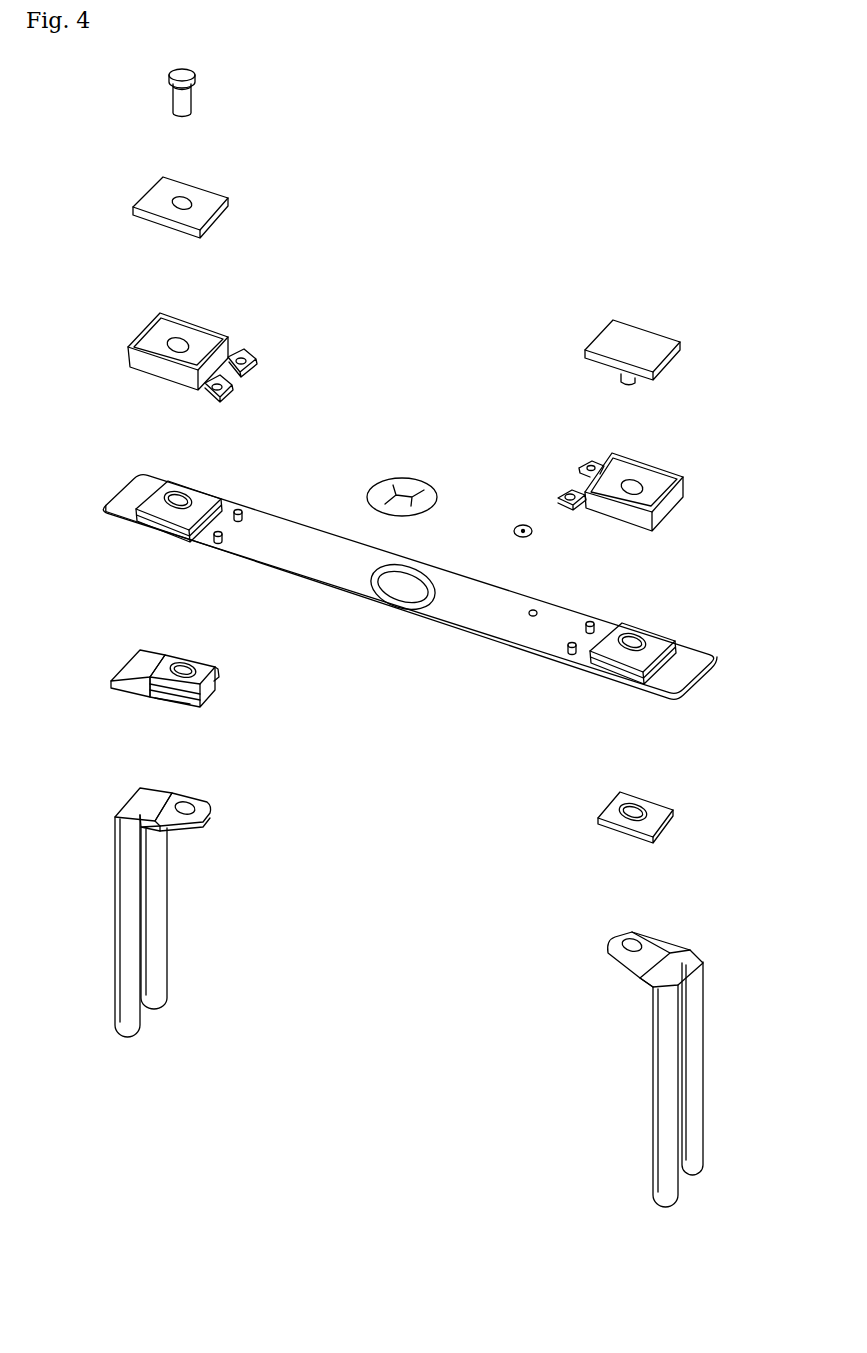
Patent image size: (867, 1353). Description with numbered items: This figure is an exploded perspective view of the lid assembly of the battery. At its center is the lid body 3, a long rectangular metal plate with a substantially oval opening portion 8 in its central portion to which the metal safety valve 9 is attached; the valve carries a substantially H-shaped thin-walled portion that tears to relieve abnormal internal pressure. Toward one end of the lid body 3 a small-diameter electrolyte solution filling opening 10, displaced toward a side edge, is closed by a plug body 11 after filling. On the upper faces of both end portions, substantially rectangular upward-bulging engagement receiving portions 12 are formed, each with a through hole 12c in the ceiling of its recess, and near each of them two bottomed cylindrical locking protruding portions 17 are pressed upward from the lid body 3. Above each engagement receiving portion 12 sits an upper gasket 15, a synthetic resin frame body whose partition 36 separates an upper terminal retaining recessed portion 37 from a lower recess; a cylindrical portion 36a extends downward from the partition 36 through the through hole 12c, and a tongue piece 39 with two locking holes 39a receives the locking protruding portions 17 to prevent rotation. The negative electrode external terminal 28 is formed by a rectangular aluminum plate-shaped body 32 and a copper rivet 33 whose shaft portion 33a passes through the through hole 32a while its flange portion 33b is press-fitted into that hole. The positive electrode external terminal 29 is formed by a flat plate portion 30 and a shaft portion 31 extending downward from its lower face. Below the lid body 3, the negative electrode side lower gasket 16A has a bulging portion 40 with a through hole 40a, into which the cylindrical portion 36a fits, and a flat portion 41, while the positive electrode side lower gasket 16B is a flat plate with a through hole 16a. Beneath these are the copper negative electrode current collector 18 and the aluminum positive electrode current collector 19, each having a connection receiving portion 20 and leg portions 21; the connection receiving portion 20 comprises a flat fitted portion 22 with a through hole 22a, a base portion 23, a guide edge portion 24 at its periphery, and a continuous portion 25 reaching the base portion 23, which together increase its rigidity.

The lid body 3 is at (299, 533).
The opening portion 8 is at (412, 576).
The safety valve 9 is at (400, 480).
The electrolyte solution filling opening 10 is at (534, 610).
The plug body 11 is at (522, 528).
The engagement receiving portion 12 is at (160, 492).
The through hole 12c is at (181, 488).
The upper gasket 15 is at (235, 340).
The negative electrode side lower gasket 16A is at (218, 668).
The positive electrode side lower gasket 16B is at (610, 810).
The through hole 16a is at (637, 802).
The locking protruding portion 17 is at (237, 511).
The negative electrode current collector 18 is at (196, 901).
The positive electrode current collector 19 is at (631, 1051).
The connection receiving portion 20 is at (207, 800).
The leg portion 21 is at (120, 897).
The fitted portion 22 is at (173, 795).
The through hole 22a is at (185, 802).
The base portion 23 is at (140, 802).
The guide edge portion 24 is at (208, 821).
The continuous portion 25 is at (163, 827).
The negative electrode external terminal 28 is at (350, 88).
The positive electrode external terminal 29 is at (495, 335).
The flat plate portion 30 is at (592, 345).
The shaft portion 31 is at (624, 378).
The plate-shaped body 32 is at (227, 194).
The through hole 32a is at (183, 198).
The rivet 33 is at (300, 67).
The shaft portion 33a is at (192, 97).
The flange portion 33b is at (194, 78).
The partition 36 is at (150, 341).
The cylindrical portion 36a is at (179, 340).
The terminal retaining recessed portion 37 is at (198, 322).
The tongue piece 39 is at (252, 372).
The locking hole 39a is at (248, 358).
The bulging portion 40 is at (170, 655).
The through hole 40a is at (183, 668).
The flat portion 41 is at (120, 670).